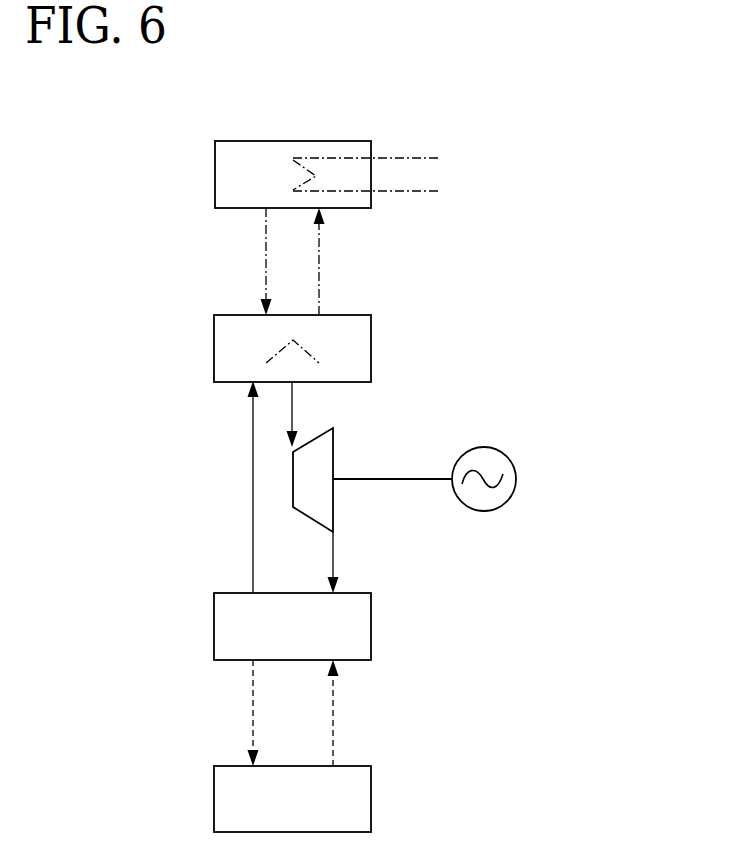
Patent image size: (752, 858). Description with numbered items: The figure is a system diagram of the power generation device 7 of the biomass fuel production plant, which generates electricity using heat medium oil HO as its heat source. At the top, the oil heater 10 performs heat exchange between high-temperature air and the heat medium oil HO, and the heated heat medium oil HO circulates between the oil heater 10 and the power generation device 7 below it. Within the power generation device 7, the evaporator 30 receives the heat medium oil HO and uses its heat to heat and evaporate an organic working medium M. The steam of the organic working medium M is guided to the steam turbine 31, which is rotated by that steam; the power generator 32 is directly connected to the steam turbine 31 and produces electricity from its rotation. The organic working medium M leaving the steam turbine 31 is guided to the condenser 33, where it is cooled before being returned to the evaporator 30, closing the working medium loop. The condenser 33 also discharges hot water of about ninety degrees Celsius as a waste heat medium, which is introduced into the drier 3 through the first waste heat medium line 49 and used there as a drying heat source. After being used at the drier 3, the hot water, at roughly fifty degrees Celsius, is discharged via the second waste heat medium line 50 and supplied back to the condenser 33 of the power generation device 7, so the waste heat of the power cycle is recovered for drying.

The power generation device 7 is at (165, 412).
The oil heater 10 is at (252, 141).
The heat medium oil HO is at (266, 260).
The evaporator 30 is at (371, 342).
The organic working medium M is at (253, 497).
The steam turbine 31 is at (334, 452).
The power generator 32 is at (516, 478).
The condenser 33 is at (371, 622).
The first waste heat medium line 49 is at (253, 703).
The second waste heat medium line 50 is at (333, 722).
The drier 3 is at (371, 795).